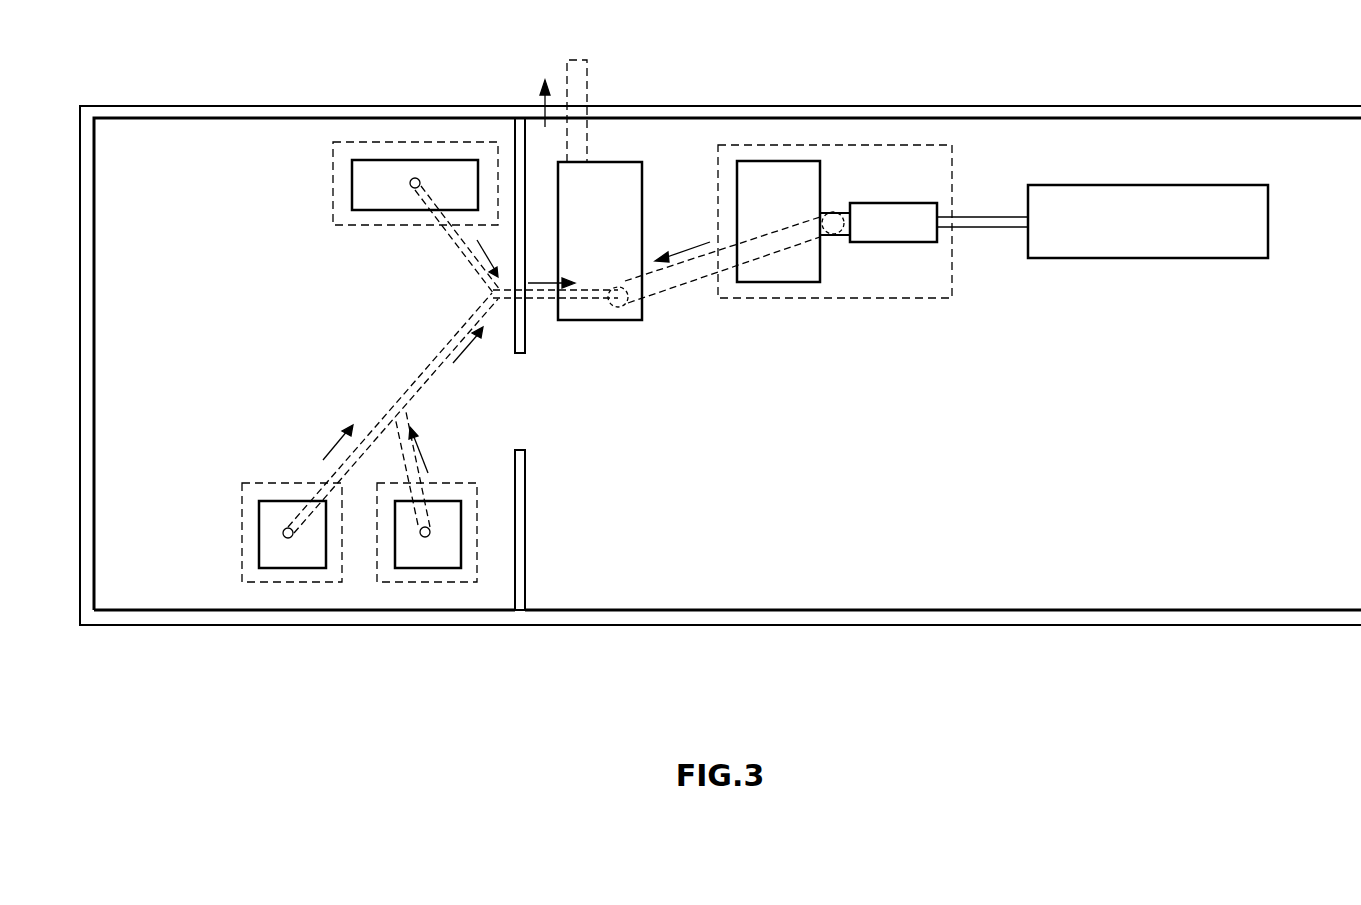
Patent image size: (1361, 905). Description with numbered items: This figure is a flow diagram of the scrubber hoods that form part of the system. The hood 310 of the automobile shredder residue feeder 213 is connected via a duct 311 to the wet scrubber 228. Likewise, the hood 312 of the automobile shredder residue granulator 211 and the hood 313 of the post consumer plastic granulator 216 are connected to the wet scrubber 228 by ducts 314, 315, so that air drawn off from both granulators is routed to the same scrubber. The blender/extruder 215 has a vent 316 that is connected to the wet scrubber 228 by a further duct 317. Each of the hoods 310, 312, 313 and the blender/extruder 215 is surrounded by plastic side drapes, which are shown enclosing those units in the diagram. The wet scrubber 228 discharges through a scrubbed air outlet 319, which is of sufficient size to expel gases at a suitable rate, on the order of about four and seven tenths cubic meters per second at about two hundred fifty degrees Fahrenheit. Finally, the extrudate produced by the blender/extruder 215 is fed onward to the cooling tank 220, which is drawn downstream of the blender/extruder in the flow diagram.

The automobile shredder residue granulator 211 is at (298, 558).
The automobile shredder residue feeder 213 is at (363, 192).
The blender/extruder 215 is at (853, 143).
The post consumer plastic granulator 216 is at (423, 558).
The cooling tank 220 is at (1155, 187).
The wet scrubber 228 is at (580, 307).
The hood 310 is at (364, 212).
The duct 311 is at (453, 257).
The hood 312 is at (235, 501).
The hood 313 is at (499, 513).
The duct 314 is at (360, 428).
The duct 315 is at (430, 455).
The vent 316 is at (615, 320).
The duct 317 is at (700, 275).
The scrubbed air outlet 319 is at (578, 90).